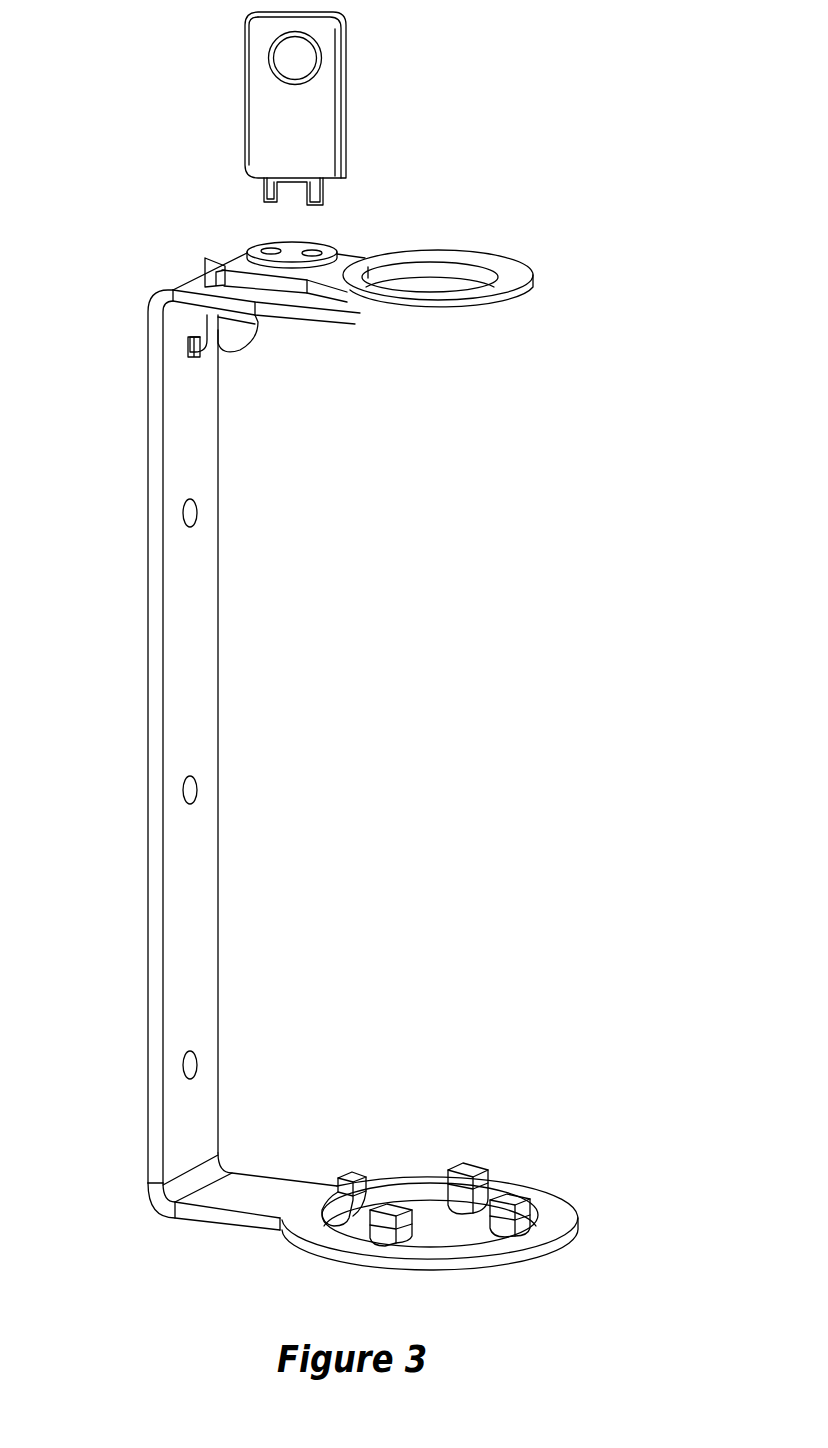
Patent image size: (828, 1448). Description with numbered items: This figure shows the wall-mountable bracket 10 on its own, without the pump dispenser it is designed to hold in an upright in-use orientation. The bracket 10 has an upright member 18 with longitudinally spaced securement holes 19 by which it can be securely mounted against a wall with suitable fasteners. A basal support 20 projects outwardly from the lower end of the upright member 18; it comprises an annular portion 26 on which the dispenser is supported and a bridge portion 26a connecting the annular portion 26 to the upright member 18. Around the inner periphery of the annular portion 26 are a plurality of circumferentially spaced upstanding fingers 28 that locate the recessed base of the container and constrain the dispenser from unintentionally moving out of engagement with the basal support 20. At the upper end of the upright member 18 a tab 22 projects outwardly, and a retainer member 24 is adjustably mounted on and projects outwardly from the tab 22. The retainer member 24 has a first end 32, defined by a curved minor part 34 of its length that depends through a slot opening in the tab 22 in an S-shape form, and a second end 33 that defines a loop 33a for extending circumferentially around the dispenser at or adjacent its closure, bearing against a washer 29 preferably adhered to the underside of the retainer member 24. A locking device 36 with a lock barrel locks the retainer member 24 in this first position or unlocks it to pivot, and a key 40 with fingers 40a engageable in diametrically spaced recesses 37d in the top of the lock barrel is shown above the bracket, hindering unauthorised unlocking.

The wall-mountable bracket 10 is at (491, 126).
The upright member 18 is at (188, 660).
The securement holes 19 is at (190, 513).
The basal support 20 is at (530, 1104).
The tab 22 is at (288, 308).
The retainer member 24 is at (367, 264).
The annular portion 26 is at (560, 1218).
The bridge portion 26a is at (240, 1197).
The upstanding fingers 28 is at (352, 1174).
The washer 29 is at (482, 323).
The first end 32 is at (190, 340).
The second end 33 is at (514, 271).
The loop 33a is at (512, 280).
The minor part 34 is at (237, 318).
The locking device 36 is at (229, 238).
The recesses 37d is at (262, 251).
The key 40 is at (350, 117).
The fingers 40a is at (273, 200).